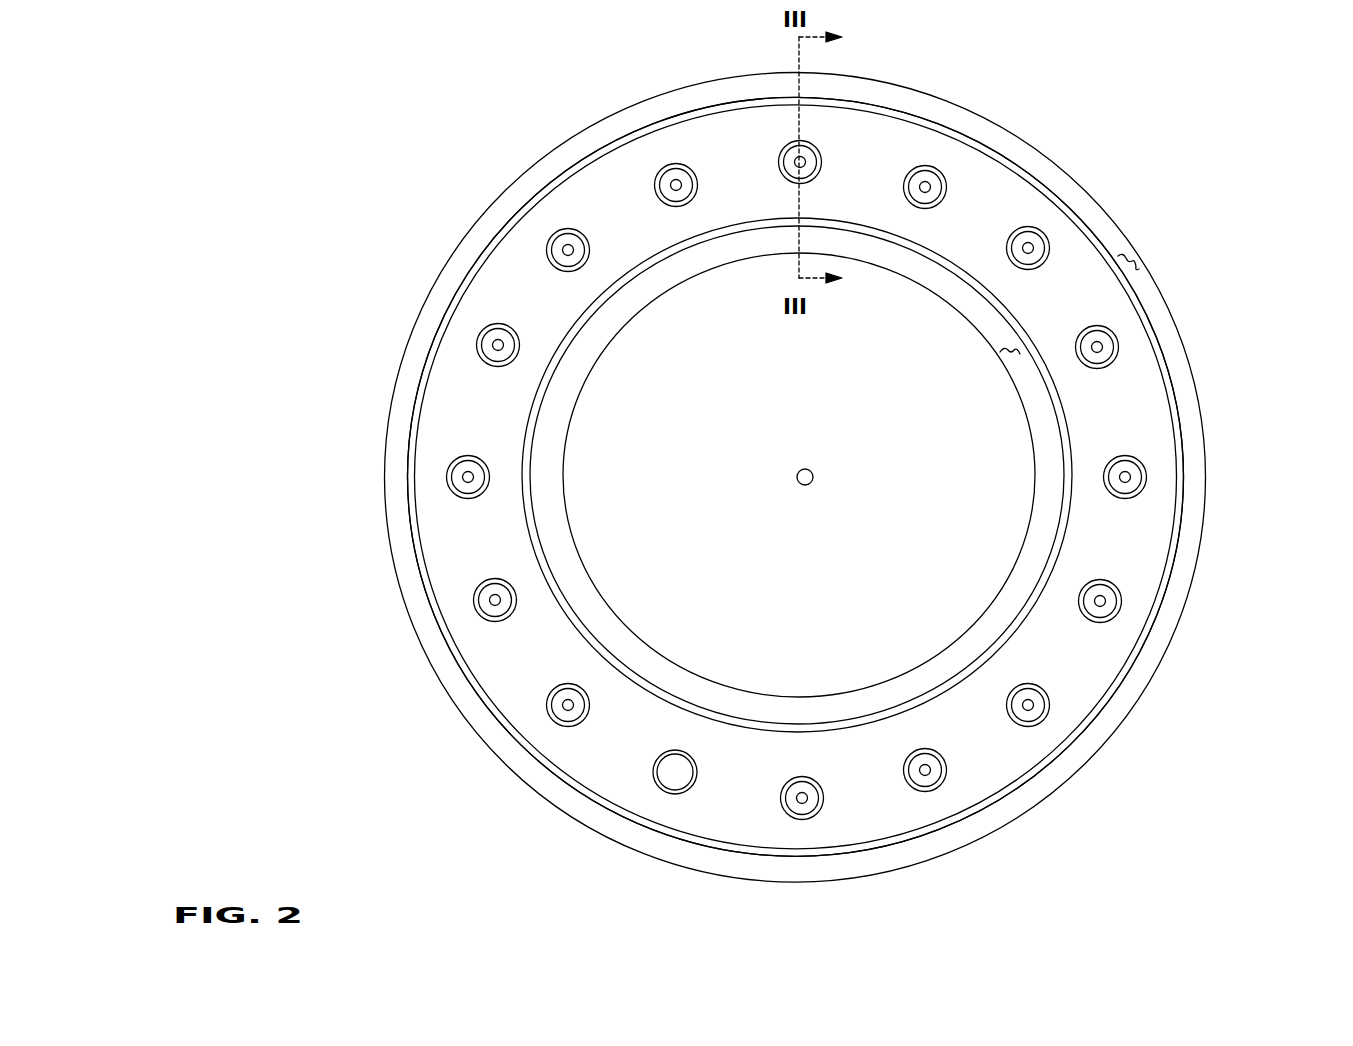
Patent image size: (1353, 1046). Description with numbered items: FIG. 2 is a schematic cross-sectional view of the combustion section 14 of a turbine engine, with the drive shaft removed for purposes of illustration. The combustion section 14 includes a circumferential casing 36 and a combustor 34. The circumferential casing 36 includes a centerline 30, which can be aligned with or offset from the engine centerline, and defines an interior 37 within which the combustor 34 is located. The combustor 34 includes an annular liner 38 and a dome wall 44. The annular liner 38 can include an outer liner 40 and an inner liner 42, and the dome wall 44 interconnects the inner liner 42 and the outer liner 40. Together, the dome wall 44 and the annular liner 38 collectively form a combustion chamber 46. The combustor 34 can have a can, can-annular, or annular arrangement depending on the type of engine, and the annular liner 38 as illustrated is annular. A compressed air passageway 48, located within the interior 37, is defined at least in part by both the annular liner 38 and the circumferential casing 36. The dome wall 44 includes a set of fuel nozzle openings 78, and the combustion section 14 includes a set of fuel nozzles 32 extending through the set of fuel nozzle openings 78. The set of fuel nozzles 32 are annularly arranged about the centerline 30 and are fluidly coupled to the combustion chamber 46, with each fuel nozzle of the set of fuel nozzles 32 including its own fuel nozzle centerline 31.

The combustion section 14 is at (358, 80).
The centerline 30 is at (802, 486).
The fuel nozzle centerline 31 is at (493, 343).
The set of fuel nozzles 32 is at (1125, 335).
The combustor 34 is at (935, 118).
The circumferential casing 36 is at (1033, 148).
The interior 37 is at (1002, 352).
The annular liner 38 is at (1185, 448).
The outer liner 40 is at (1175, 560).
The inner liner 42 is at (537, 542).
The dome wall 44 is at (457, 373).
The combustion chamber 46 is at (513, 240).
The compressed air passageway 48 is at (1133, 263).
The set of fuel nozzle openings 78 is at (556, 714).